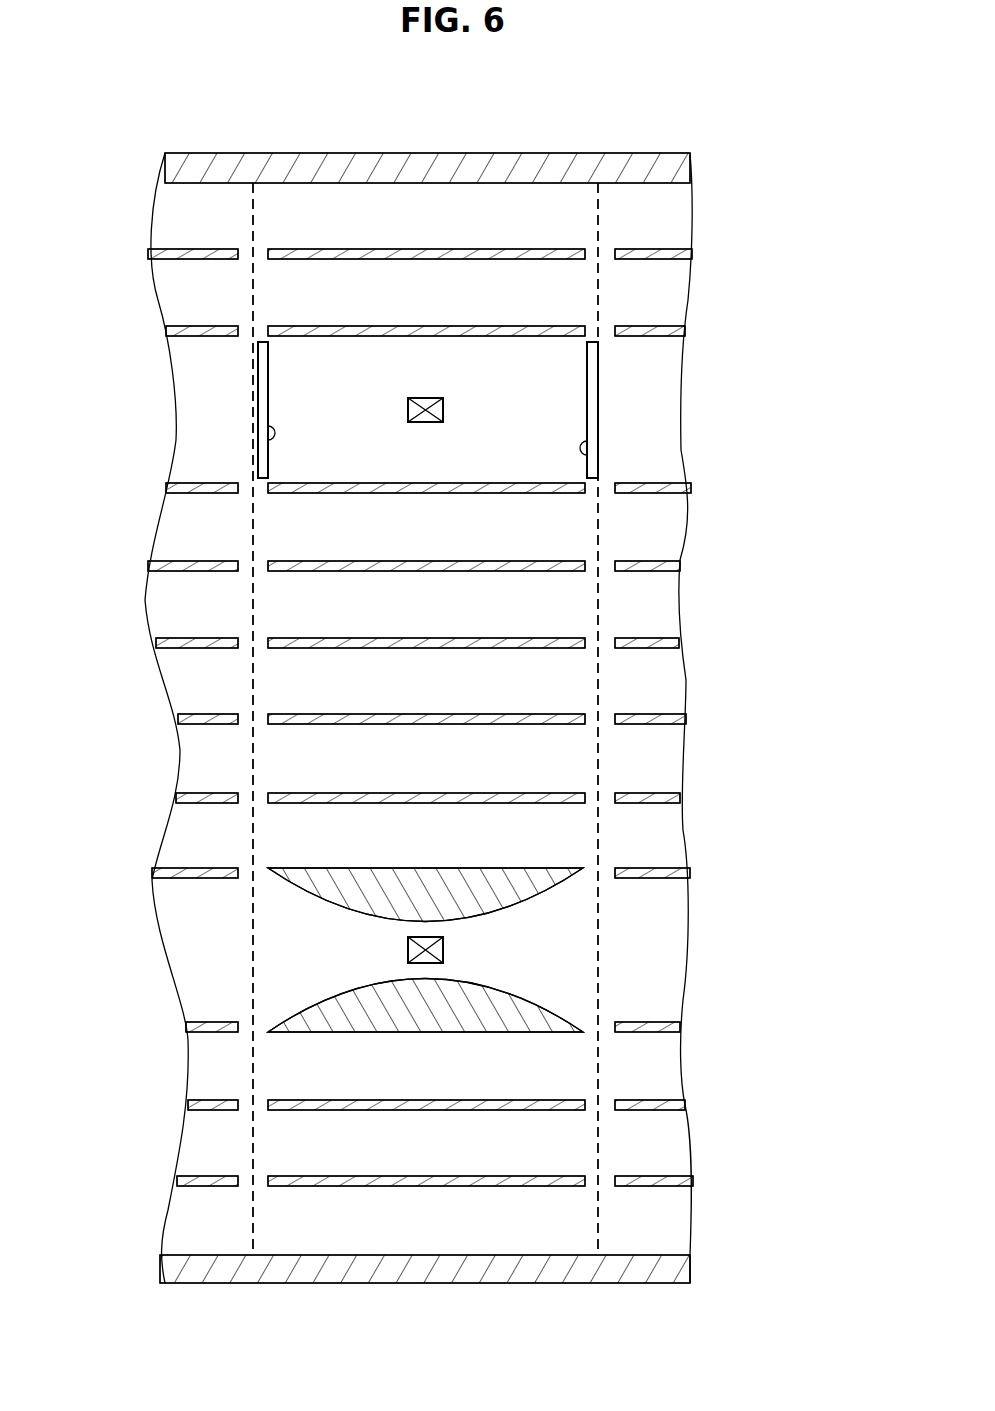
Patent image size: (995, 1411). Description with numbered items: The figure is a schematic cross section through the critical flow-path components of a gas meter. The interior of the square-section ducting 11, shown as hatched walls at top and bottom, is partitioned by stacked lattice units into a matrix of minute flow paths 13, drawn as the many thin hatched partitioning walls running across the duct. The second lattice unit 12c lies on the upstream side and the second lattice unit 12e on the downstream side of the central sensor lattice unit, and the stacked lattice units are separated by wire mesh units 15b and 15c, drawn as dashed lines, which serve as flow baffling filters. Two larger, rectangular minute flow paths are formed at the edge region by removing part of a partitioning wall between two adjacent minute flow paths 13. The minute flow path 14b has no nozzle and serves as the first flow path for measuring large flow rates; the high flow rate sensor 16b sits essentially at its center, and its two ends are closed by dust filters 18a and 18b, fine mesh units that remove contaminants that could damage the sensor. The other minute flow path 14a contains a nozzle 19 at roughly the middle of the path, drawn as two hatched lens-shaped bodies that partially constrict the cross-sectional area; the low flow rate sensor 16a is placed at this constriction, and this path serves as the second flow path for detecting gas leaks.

The ducting 11 is at (450, 153).
The second lattice unit 12c is at (197, 203).
The second lattice unit 12e is at (641, 201).
The minute flow paths 13 is at (545, 297).
The minute flow path 14a is at (550, 920).
The minute flow path 14b is at (560, 387).
The mesh unit 15b is at (258, 392).
The mesh unit 15c is at (600, 598).
The low flow rate sensor 16a is at (443, 950).
The high flow rate sensor 16b is at (443, 410).
The dust filter 18a is at (266, 448).
The dust filter 18b is at (589, 452).
The nozzle 19 is at (560, 975).